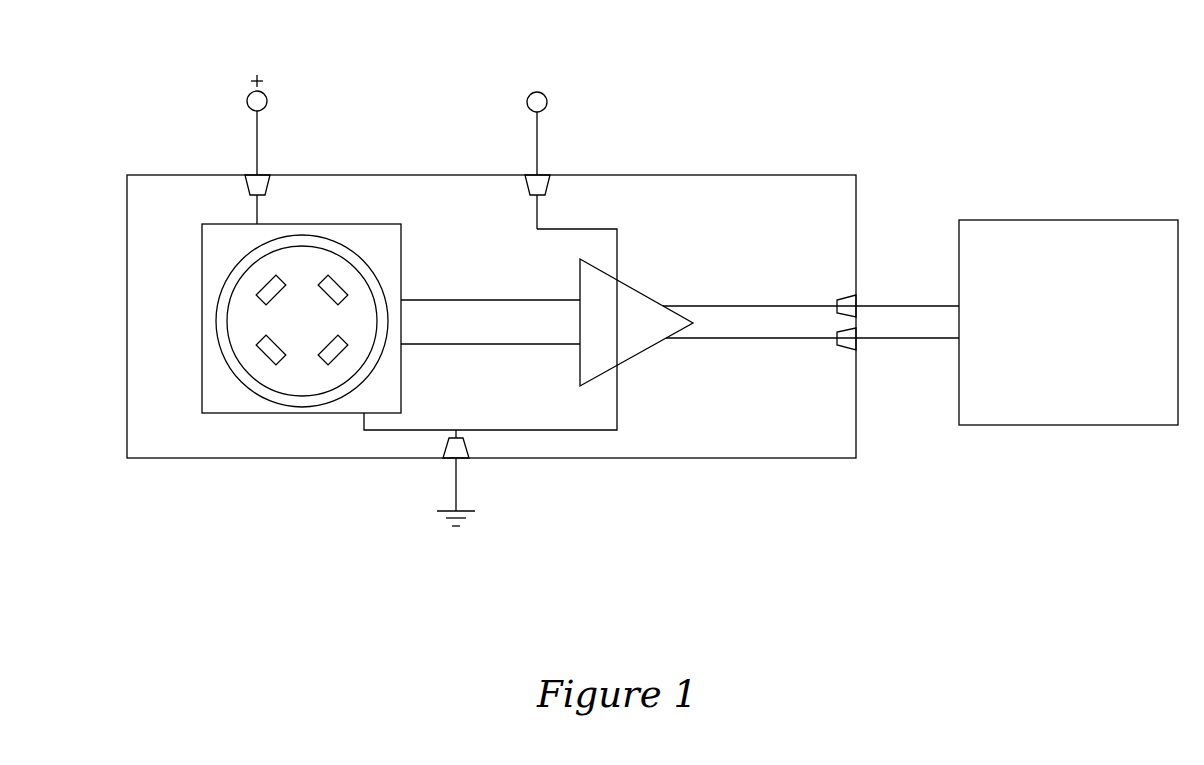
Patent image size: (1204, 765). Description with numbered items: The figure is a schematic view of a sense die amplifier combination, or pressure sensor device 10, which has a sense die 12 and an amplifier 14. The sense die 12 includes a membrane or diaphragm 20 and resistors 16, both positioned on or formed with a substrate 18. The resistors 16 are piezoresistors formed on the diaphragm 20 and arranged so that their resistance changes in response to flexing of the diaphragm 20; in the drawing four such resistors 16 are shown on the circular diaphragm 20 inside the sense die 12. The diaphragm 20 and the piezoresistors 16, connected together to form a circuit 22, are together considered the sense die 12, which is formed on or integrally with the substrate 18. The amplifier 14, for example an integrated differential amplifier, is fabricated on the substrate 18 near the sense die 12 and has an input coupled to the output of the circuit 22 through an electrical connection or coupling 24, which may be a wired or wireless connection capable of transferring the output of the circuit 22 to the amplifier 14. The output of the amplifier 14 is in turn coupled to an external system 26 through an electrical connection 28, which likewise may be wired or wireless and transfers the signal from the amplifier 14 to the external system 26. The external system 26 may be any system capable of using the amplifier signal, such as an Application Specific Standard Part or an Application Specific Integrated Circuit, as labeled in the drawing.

The pressure sensor device 10 is at (720, 76).
The sense die 12 is at (215, 250).
The amplifier 14 is at (630, 300).
The resistors 16 is at (259, 287).
The substrate 18 is at (278, 447).
The diaphragm 20 is at (304, 262).
The circuit 22 is at (250, 326).
The electrical connection 24 is at (511, 292).
The external system 26 is at (1065, 220).
The electrical connection 28 is at (903, 296).